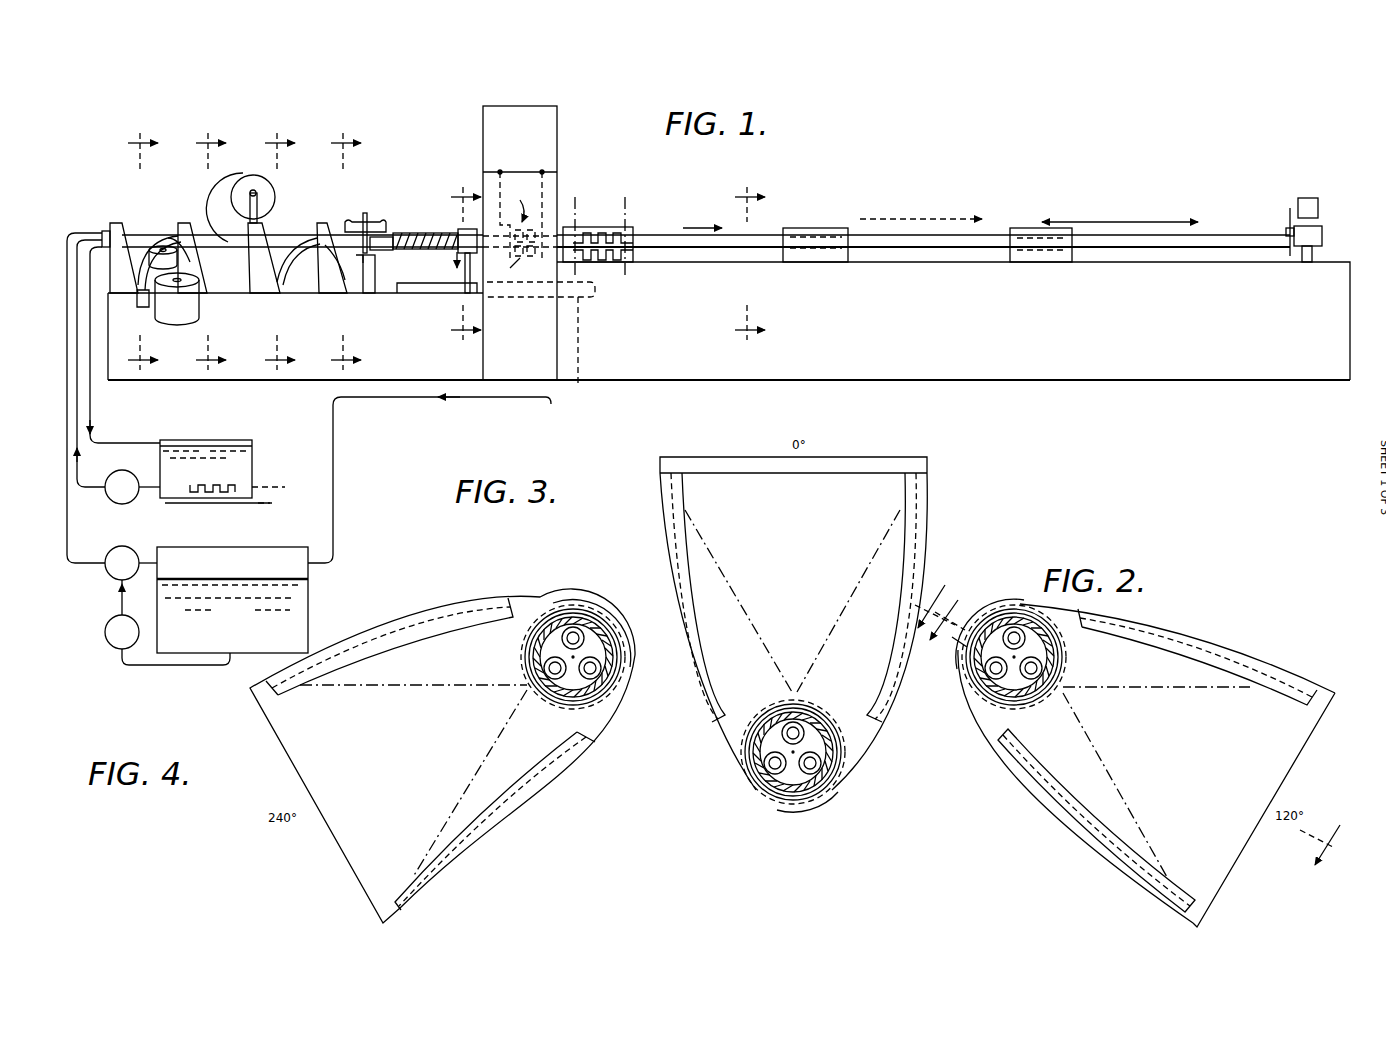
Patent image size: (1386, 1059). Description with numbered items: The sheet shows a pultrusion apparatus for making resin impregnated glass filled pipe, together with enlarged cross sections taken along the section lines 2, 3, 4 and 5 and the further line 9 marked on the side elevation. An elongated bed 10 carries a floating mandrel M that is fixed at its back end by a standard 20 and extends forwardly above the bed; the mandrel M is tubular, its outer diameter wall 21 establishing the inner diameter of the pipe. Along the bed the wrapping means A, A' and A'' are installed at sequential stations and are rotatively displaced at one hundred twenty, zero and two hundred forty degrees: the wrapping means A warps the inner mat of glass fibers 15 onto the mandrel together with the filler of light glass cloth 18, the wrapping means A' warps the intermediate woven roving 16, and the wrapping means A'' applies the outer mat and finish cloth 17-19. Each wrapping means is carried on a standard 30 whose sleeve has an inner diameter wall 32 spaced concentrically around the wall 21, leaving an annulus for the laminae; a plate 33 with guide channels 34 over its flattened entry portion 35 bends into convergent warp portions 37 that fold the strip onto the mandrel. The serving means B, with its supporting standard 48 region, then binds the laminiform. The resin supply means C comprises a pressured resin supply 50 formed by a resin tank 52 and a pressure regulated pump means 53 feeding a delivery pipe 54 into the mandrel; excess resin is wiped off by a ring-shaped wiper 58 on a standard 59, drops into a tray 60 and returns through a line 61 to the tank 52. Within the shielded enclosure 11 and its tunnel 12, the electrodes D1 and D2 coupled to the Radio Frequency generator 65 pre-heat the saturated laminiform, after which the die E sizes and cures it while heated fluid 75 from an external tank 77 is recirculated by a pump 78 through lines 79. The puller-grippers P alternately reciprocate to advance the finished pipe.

In FIG. 1, the section line 2— 2 is at (135, 246).
In FIG. 1, the section line 3— 3 is at (204, 246).
In FIG. 1, the section line 4— 4 is at (273, 246).
In FIG. 1, the tape-cutting device / section line 5- 5 is at (1302, 192).
In FIG. 3, the tape-cutting device / section line 5- 5 is at (935, 598).
In FIG. 2, the tape-cutting device / section line 5- 5 is at (1138, 723).
In FIG. 1, the section line 9- 9 is at (339, 246).
In FIG. 1, the elongated bed 10 is at (729, 321).
In FIG. 1, the shielded enclosure 11 is at (557, 194).
In FIG. 1, the tunnel 12 is at (738, 263).
In FIG. 1, the inner mat of glass fibers 15 is at (200, 310).
In FIG. 1, the intermediate glass cloth of woven roving 16 is at (262, 195).
In FIG. 1, the outer mat of glass fibers and finish cloth 17-19 is at (315, 290).
In FIG. 1, the filler of light glass cloth 18 is at (178, 255).
In FIG. 1, the standard 20 is at (112, 222).
In FIG. 3, the outer diameter wall 21 is at (839, 750).
In FIG. 4, the outer diameter wall 21 is at (558, 679).
In FIG. 2, the outer diameter wall 21 is at (1046, 653).
In FIG. 1, the standard 30 is at (200, 275).
In FIG. 3, the inner diameter wall 32 is at (836, 752).
In FIG. 4, the inner diameter wall 32 is at (573, 671).
In FIG. 2, the inner diameter wall 32 is at (1038, 657).
In FIG. 3, the plate 33 is at (866, 476).
In FIG. 4, the plate 33 is at (364, 848).
In FIG. 2, the plate 33 is at (1281, 746).
In FIG. 3, the guide channels 34 is at (678, 556).
In FIG. 4, the guide channels 34 is at (533, 780).
In FIG. 2, the guide channels 34 is at (1078, 815).
In FIG. 3, the entry portion 35 is at (792, 601).
In FIG. 4, the entry portion 35 is at (413, 781).
In FIG. 2, the entry portion 35 is at (1156, 782).
In FIG. 3, the warp portions 37 is at (808, 756).
In FIG. 4, the warp portions 37 is at (591, 634).
In FIG. 2, the warp portions 37 is at (995, 651).
In FIG. 1, the support post 48 is at (370, 295).
In FIG. 1, the pressured resin supply 50 is at (106, 650).
In FIG. 1, the resin tank 52 is at (232, 600).
In FIG. 1, the pressure regulated pump means 53 is at (112, 578).
In FIG. 1, the delivery pipe 54 is at (67, 525).
In FIG. 1, the ring-shaped wiper 58 is at (462, 228).
In FIG. 1, the standard 59 is at (456, 270).
In FIG. 1, the tray 60 is at (426, 292).
In FIG. 1, the line 61 is at (551, 404).
In FIG. 1, the Radio Frequency generator 65 is at (520, 243).
In FIG. 1, the fluid heat conductor 75 is at (215, 471).
In FIG. 1, the external tank 77 is at (253, 468).
In FIG. 1, the pump 78 is at (122, 504).
In FIG. 1, the lines 79 is at (90, 440).
In FIG. 1, the wrapping means A is at (185, 238).
In FIG. 2, the wrapping means A is at (1197, 646).
In FIG. 1, the wrapping means A' is at (284, 238).
In FIG. 3, the wrapping means A' is at (929, 597).
In FIG. 1, the wrapping means A'' is at (347, 204).
In FIG. 4, the wrapping means A'' is at (526, 565).
In FIG. 1, the serving means B is at (376, 225).
In FIG. 1, the resin supply means C is at (308, 598).
In FIG. 1, the electrode D1 is at (519, 218).
In FIG. 1, the electrode D2 is at (527, 269).
In FIG. 1, the die E is at (640, 224).
In FIG. 1, the mandrel M is at (144, 222).
In FIG. 3, the mandrel M is at (750, 815).
In FIG. 4, the mandrel M is at (608, 729).
In FIG. 2, the mandrel M is at (972, 738).
In FIG. 1, the puller-grippers P is at (815, 225).